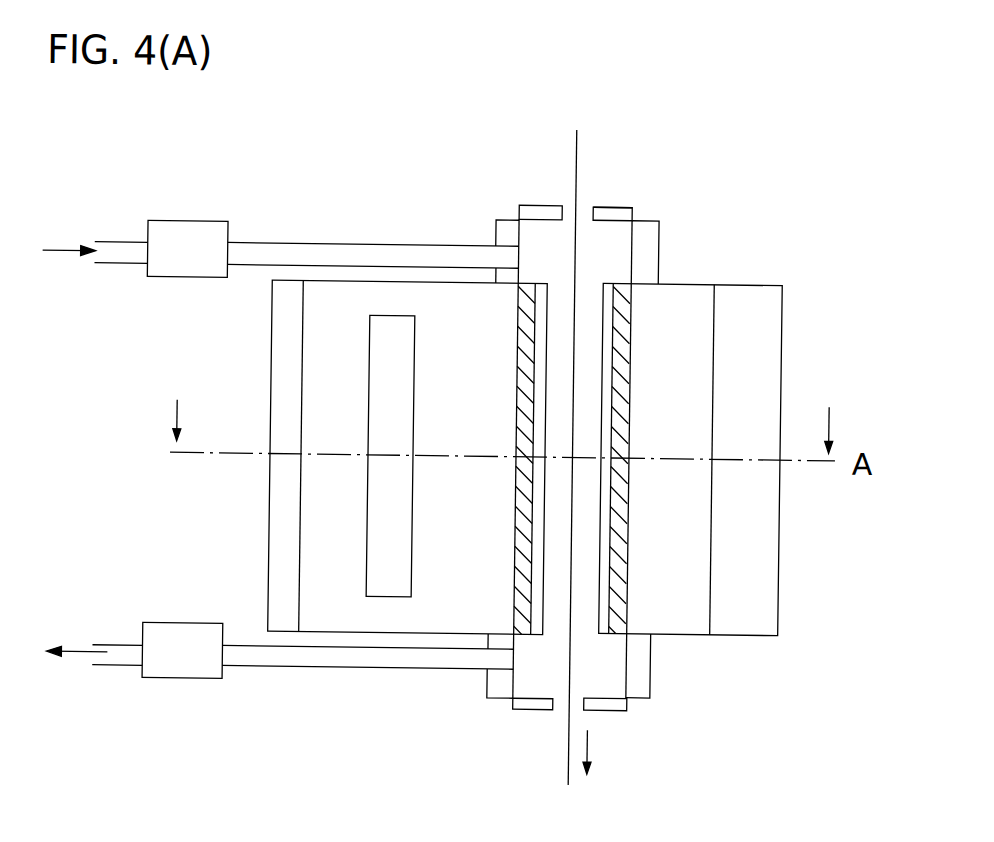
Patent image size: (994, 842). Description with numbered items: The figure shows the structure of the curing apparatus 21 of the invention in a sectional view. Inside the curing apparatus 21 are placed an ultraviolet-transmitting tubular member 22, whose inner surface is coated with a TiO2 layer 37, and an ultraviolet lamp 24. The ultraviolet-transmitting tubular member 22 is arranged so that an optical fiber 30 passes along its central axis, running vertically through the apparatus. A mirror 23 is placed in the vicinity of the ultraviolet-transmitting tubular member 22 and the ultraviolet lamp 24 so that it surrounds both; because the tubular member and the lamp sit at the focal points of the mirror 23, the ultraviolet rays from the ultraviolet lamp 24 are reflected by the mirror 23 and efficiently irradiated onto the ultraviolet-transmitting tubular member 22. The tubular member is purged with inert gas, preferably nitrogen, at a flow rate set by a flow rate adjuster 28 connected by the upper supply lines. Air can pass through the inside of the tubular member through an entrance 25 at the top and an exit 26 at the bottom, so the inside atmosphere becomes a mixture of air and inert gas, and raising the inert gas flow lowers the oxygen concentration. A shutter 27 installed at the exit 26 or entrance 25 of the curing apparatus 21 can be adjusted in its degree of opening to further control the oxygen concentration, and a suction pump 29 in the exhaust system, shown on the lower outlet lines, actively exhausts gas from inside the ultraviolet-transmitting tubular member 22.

The curing apparatus 21 is at (588, 459).
The ultraviolet-transmitting tubular member 22 is at (647, 405).
The mirror 23 is at (504, 412).
The ultraviolet lamp 24 is at (304, 455).
The entrance 25 is at (655, 136).
The exit 26 is at (542, 765).
The shutter 27 is at (602, 439).
The flow rate adjuster 28 is at (281, 195).
The suction pump 29 is at (280, 601).
The optical fiber 30 is at (619, 393).
The TiO2 layer 37 is at (615, 498).